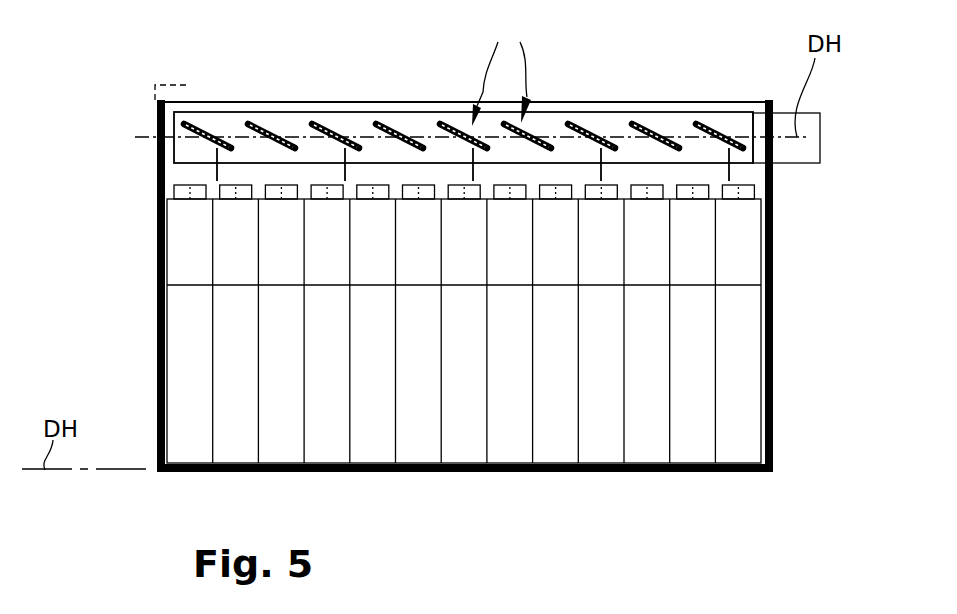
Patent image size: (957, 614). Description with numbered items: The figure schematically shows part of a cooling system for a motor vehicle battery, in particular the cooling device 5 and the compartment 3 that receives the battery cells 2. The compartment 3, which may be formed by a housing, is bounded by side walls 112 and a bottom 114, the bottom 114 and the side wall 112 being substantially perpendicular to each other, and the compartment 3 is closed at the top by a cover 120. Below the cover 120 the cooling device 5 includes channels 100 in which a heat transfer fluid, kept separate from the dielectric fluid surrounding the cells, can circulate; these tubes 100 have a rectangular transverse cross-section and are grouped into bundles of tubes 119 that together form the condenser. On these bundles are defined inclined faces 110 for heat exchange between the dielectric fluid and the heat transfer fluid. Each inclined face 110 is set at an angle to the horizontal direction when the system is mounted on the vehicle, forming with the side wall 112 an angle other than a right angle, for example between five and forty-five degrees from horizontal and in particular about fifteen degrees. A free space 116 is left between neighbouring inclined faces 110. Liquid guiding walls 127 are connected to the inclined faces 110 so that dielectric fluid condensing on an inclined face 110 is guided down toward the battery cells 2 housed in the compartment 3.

The battery cells 2 is at (507, 452).
The compartment 3 is at (773, 265).
The cooling device 5 is at (752, 508).
The channels 100 is at (322, 127).
The inclined faces 110 is at (233, 128).
The side walls 112 is at (773, 415).
The bottom 114 is at (677, 473).
The free space 116 is at (560, 148).
The bundles of tubes 119 is at (509, 71).
The cover 120 is at (165, 84).
The liquid guiding walls 127 is at (345, 181).